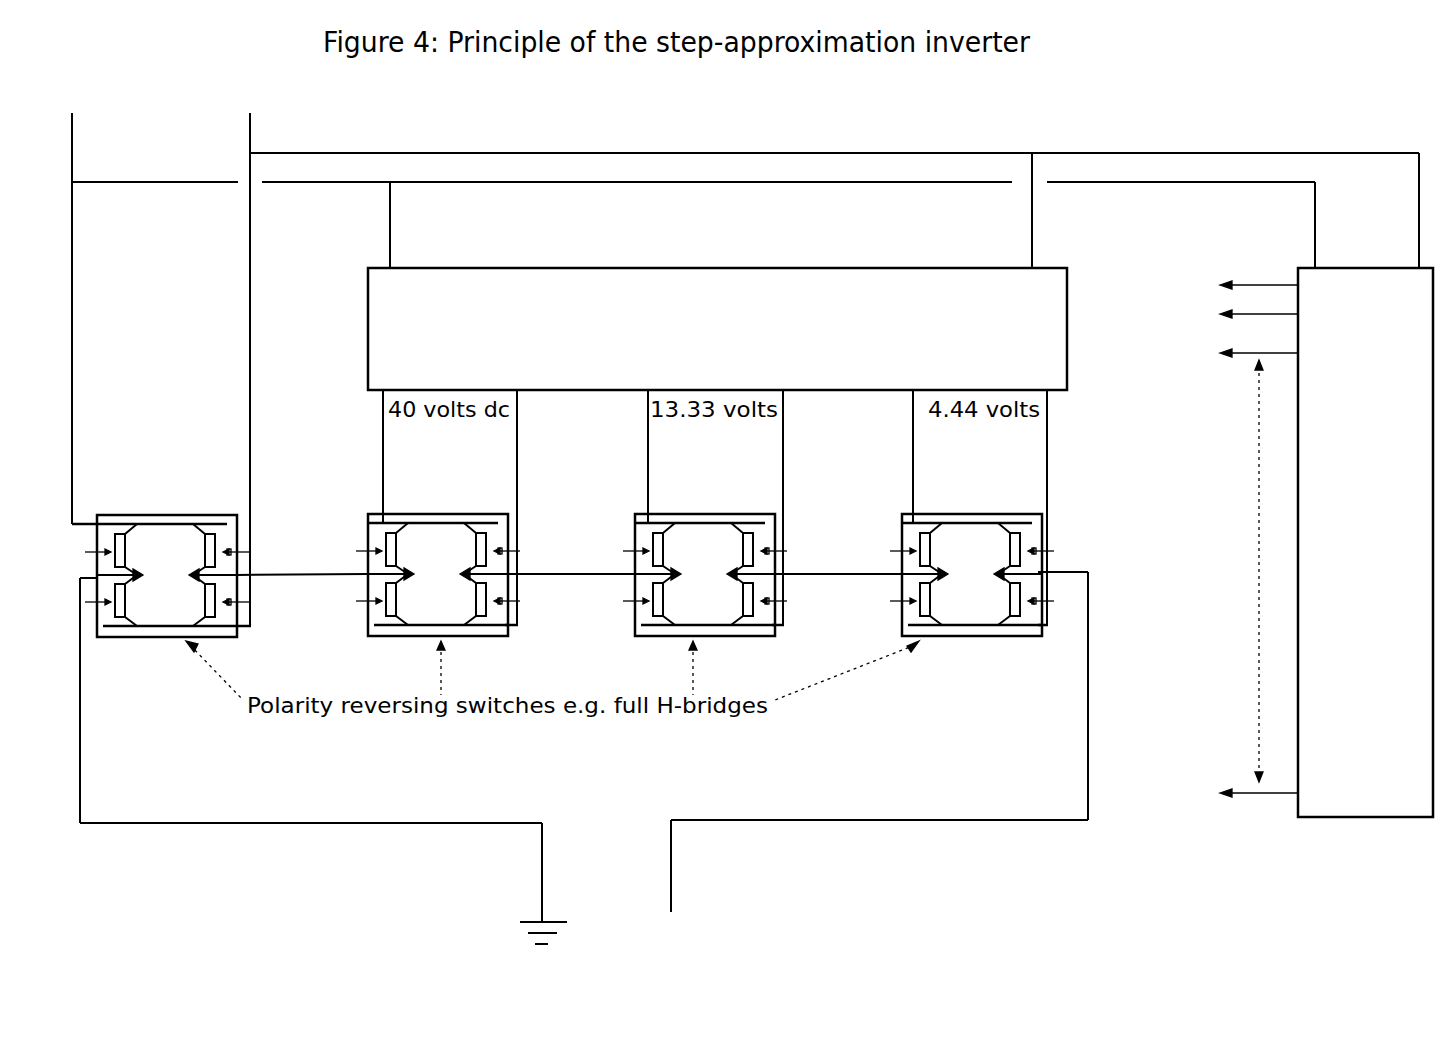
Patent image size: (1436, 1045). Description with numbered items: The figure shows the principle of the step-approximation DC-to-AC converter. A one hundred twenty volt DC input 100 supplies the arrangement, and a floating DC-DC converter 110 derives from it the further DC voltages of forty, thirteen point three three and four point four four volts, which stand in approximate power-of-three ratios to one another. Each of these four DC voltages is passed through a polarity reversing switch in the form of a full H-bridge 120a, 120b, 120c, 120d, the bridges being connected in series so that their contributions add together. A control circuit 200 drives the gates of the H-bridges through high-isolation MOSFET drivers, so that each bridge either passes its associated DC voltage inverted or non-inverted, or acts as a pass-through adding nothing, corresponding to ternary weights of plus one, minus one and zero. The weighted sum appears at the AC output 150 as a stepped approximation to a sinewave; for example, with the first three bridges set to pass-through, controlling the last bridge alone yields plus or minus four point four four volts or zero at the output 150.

The 120 volts DC input 100 is at (741, 353).
The floating DC-DC converter 110 is at (717, 329).
The full H-bridge 120a is at (167, 589).
The full H-bridge 120b is at (434, 584).
The full H-bridge 120c is at (705, 585).
The full H-bridge 120d is at (972, 587).
The output 150 is at (584, 758).
The control circuit 200 is at (1326, 542).